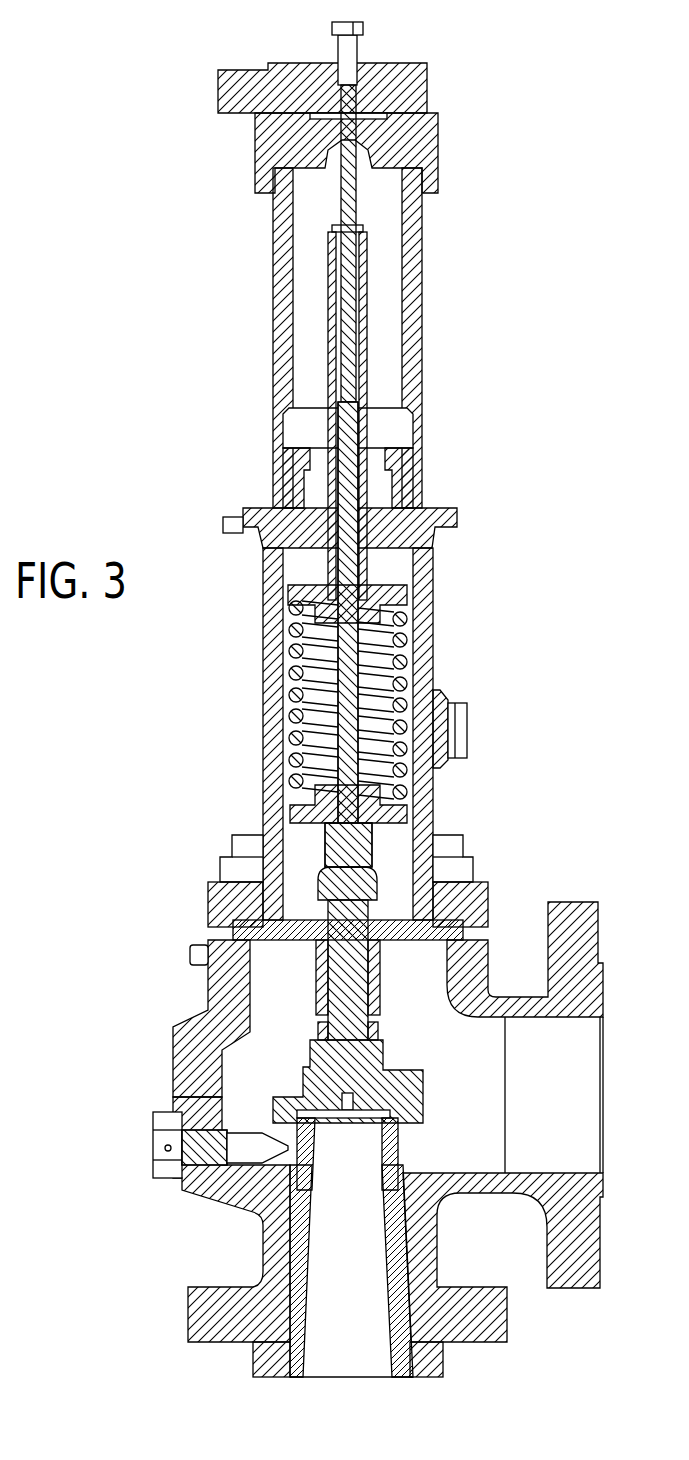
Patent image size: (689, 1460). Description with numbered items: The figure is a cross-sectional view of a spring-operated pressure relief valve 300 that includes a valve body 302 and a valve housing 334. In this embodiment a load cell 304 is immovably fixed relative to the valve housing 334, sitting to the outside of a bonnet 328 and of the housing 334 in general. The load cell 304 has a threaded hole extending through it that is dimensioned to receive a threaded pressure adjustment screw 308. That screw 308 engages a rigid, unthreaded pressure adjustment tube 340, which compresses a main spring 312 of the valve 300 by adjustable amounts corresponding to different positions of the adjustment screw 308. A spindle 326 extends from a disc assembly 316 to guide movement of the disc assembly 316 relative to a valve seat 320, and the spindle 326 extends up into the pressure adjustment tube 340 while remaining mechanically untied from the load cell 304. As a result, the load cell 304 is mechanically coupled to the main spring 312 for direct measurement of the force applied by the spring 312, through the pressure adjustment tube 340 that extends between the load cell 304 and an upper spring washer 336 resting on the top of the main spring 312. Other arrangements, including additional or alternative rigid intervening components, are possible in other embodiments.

The valve 300 is at (165, 56).
The valve body 302 is at (200, 1022).
The load cell 304 is at (415, 90).
The threaded pressure adjustment screw 308 is at (340, 26).
The main spring 312 is at (295, 700).
The disc assembly 316 is at (428, 1082).
The valve seat 320 is at (290, 1110).
The spindle 326 is at (345, 820).
The bonnet 328 is at (266, 592).
The valve housing 334 is at (492, 472).
The upper spring washer 336 is at (405, 598).
The pressure adjustment tube 340 is at (330, 292).